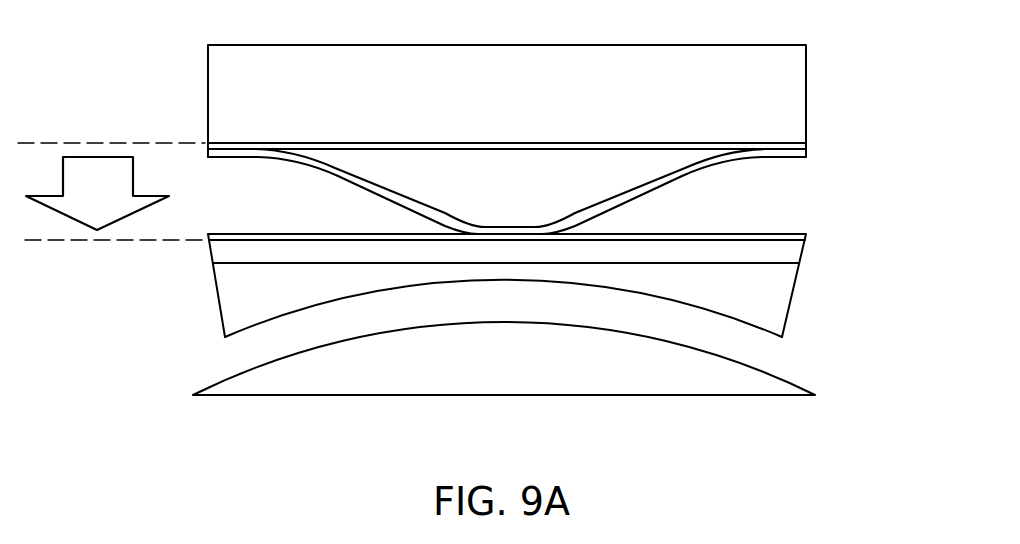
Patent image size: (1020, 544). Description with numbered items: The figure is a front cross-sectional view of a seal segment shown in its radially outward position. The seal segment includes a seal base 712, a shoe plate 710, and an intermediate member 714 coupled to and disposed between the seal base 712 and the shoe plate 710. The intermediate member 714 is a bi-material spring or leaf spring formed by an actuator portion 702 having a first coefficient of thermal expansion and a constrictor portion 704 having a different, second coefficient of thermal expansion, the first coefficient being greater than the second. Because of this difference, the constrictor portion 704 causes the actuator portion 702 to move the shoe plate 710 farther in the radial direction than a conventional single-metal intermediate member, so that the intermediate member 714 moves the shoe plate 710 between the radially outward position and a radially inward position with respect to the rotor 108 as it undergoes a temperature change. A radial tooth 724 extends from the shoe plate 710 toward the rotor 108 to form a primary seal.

The seal base 712 is at (807, 98).
The actuator portion 702 is at (262, 160).
The constrictor portion 704 is at (208, 146).
The intermediate member 714 is at (815, 143).
The shoe plate 710 is at (805, 252).
The radial tooth 724 is at (792, 305).
The rotor 108 is at (328, 396).